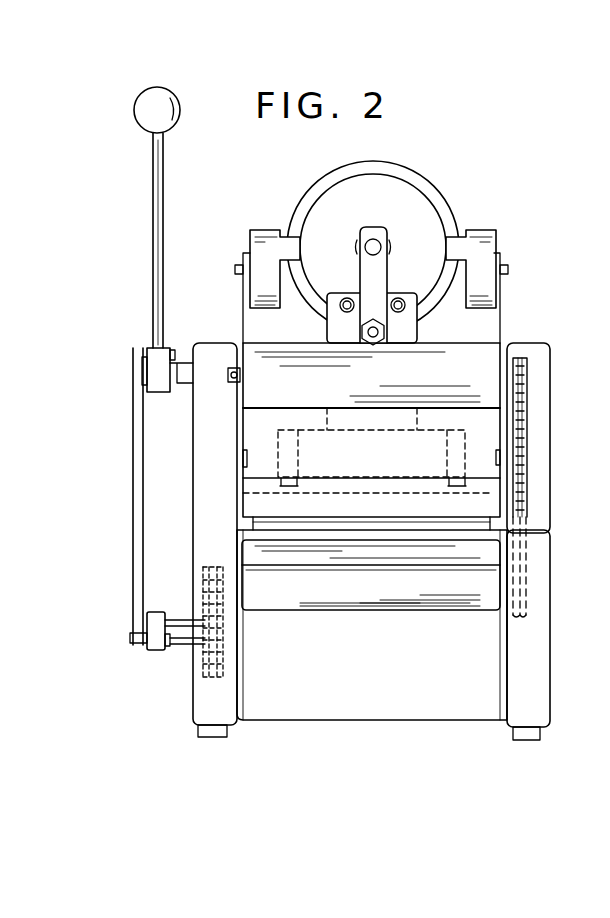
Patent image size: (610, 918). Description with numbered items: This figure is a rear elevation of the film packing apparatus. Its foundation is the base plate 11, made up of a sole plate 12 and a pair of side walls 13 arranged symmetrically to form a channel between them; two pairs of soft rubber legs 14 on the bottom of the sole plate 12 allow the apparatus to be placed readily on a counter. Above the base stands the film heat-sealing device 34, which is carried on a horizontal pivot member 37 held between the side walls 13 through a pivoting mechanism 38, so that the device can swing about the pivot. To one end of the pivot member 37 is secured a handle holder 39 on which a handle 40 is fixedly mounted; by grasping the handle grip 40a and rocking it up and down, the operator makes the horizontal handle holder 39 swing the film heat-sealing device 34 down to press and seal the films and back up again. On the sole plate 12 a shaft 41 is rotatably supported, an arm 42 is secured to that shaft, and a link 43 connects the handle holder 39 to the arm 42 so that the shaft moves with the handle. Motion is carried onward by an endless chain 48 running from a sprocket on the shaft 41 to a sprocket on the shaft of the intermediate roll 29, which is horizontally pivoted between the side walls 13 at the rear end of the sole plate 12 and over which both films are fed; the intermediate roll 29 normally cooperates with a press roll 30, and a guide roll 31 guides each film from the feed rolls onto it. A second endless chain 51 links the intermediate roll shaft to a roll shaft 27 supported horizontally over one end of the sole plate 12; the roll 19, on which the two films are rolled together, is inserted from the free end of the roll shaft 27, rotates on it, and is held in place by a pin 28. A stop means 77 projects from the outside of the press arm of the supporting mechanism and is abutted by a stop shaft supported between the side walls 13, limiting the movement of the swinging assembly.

The base plate 11 is at (555, 670).
The sole plate 12 is at (438, 703).
The side walls 13 is at (197, 482).
The rubber legs 14 is at (541, 734).
The roll 19 is at (484, 357).
The roll shaft 27 is at (232, 370).
The pin 28 is at (228, 381).
The intermediate roll 29 is at (356, 590).
The press roll 30 is at (470, 560).
The guide roll 31 is at (482, 505).
The film heat-sealing device 34 is at (441, 183).
The pivot member 37 is at (182, 382).
The pivoting mechanism 38 is at (418, 334).
The handle holder 39 is at (150, 370).
The handle 40 is at (164, 243).
The handle grip 40a is at (172, 126).
The shaft 41 is at (180, 641).
The arm 42 is at (148, 623).
The link 43 is at (134, 537).
The endless chain 48 is at (195, 591).
The endless chain 51 is at (522, 458).
The stop means 77 is at (362, 332).